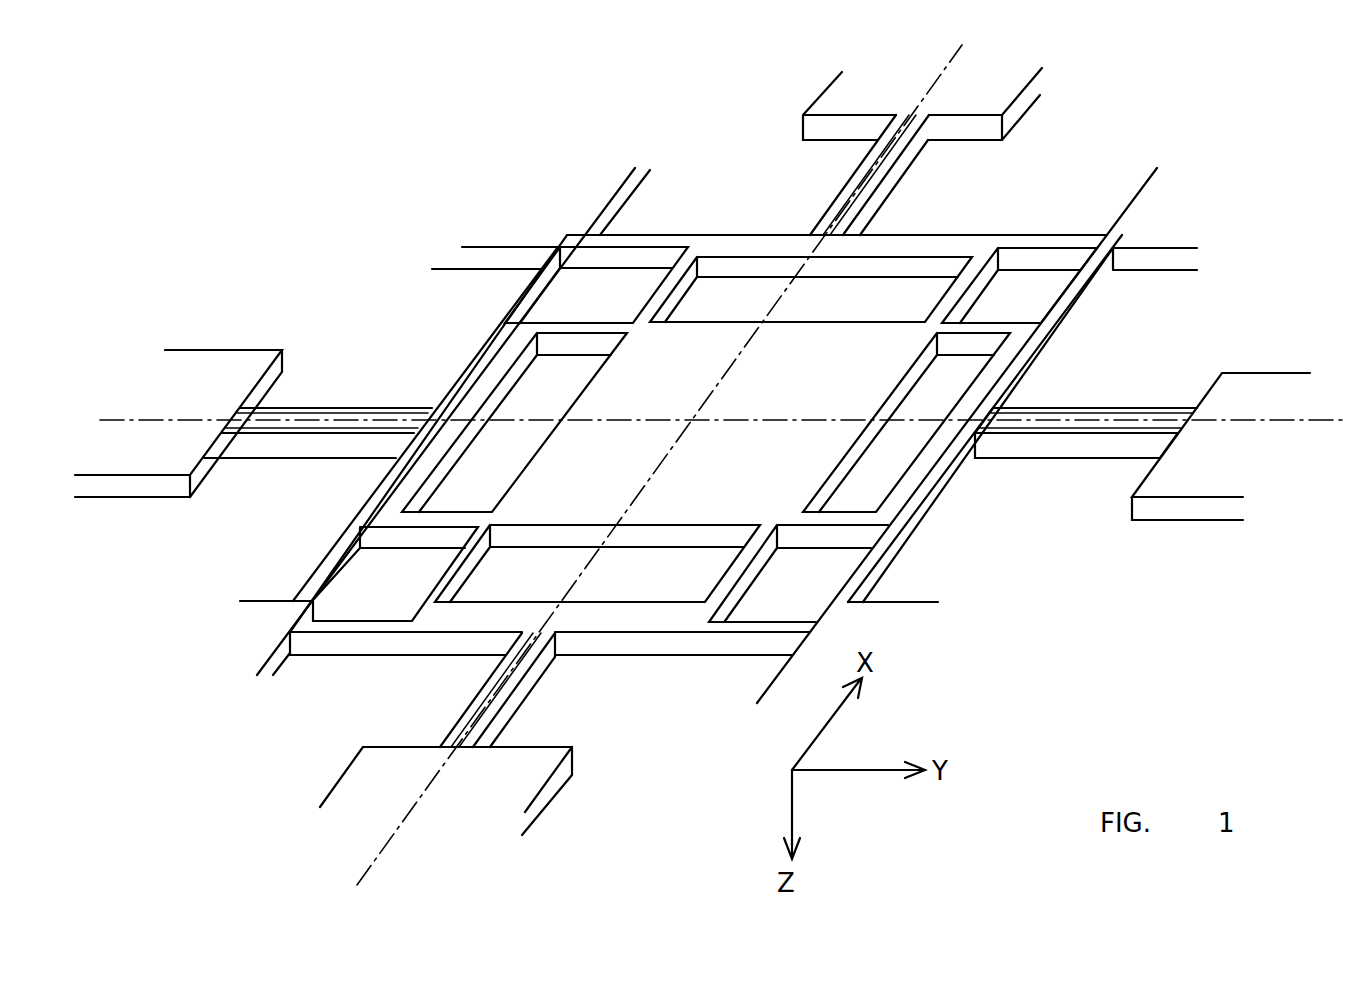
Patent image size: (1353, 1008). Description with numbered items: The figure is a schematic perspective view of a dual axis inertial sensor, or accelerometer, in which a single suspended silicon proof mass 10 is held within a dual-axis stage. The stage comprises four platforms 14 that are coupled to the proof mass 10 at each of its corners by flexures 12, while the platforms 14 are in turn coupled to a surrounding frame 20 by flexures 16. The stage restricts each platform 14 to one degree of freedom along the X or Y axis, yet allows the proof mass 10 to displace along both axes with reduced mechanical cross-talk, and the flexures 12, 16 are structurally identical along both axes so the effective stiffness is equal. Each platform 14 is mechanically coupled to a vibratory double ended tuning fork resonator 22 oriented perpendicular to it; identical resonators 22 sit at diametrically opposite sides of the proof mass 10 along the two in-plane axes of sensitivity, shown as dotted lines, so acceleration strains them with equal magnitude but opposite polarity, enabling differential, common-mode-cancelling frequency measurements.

The proof mass 10 is at (765, 462).
The flexures 12 is at (660, 292).
The platforms 14 is at (945, 243).
The flexures 16 is at (648, 243).
The frame 20 is at (975, 82).
The vibratory double ended tuning fork resonators 22 is at (900, 170).